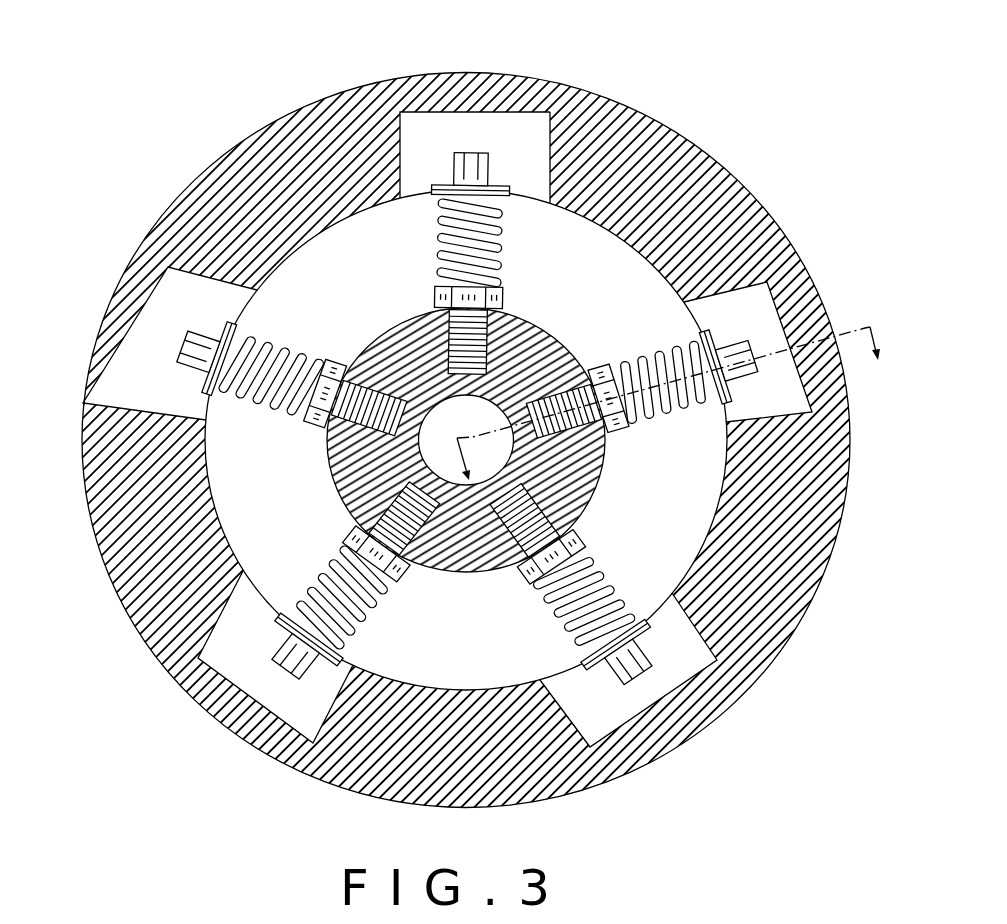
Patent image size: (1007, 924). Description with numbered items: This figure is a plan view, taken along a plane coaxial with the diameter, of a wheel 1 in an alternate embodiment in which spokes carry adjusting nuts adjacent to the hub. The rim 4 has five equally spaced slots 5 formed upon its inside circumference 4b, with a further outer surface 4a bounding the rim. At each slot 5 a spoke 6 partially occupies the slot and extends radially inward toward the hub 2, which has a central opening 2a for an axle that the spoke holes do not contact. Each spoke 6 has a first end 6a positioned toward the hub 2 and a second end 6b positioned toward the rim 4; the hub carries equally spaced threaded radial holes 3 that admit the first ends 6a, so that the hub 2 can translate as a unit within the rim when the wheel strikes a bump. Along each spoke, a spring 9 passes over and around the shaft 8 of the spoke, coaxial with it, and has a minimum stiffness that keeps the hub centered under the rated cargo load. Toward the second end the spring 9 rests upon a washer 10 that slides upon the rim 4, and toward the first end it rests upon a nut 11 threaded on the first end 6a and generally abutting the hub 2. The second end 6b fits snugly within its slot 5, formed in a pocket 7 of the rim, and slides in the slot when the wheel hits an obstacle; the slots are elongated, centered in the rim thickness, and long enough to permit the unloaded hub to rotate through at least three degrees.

The wheel 1 is at (503, 462).
The hub 2 is at (503, 462).
The central bore 2a is at (513, 447).
The radial holes 3 is at (445, 308).
The rim 4 is at (503, 462).
The outer surface of ring 4a is at (670, 128).
The inside circumference 4b is at (659, 272).
The slot 5 is at (665, 403).
The spoke 6 is at (461, 371).
The first end 6a is at (400, 325).
The second end 6b is at (445, 208).
The pocket in ring 7 is at (500, 147).
The shaft 8 is at (498, 255).
The spring 9 is at (500, 232).
The washer 10 is at (551, 150).
The nut 11 is at (502, 305).